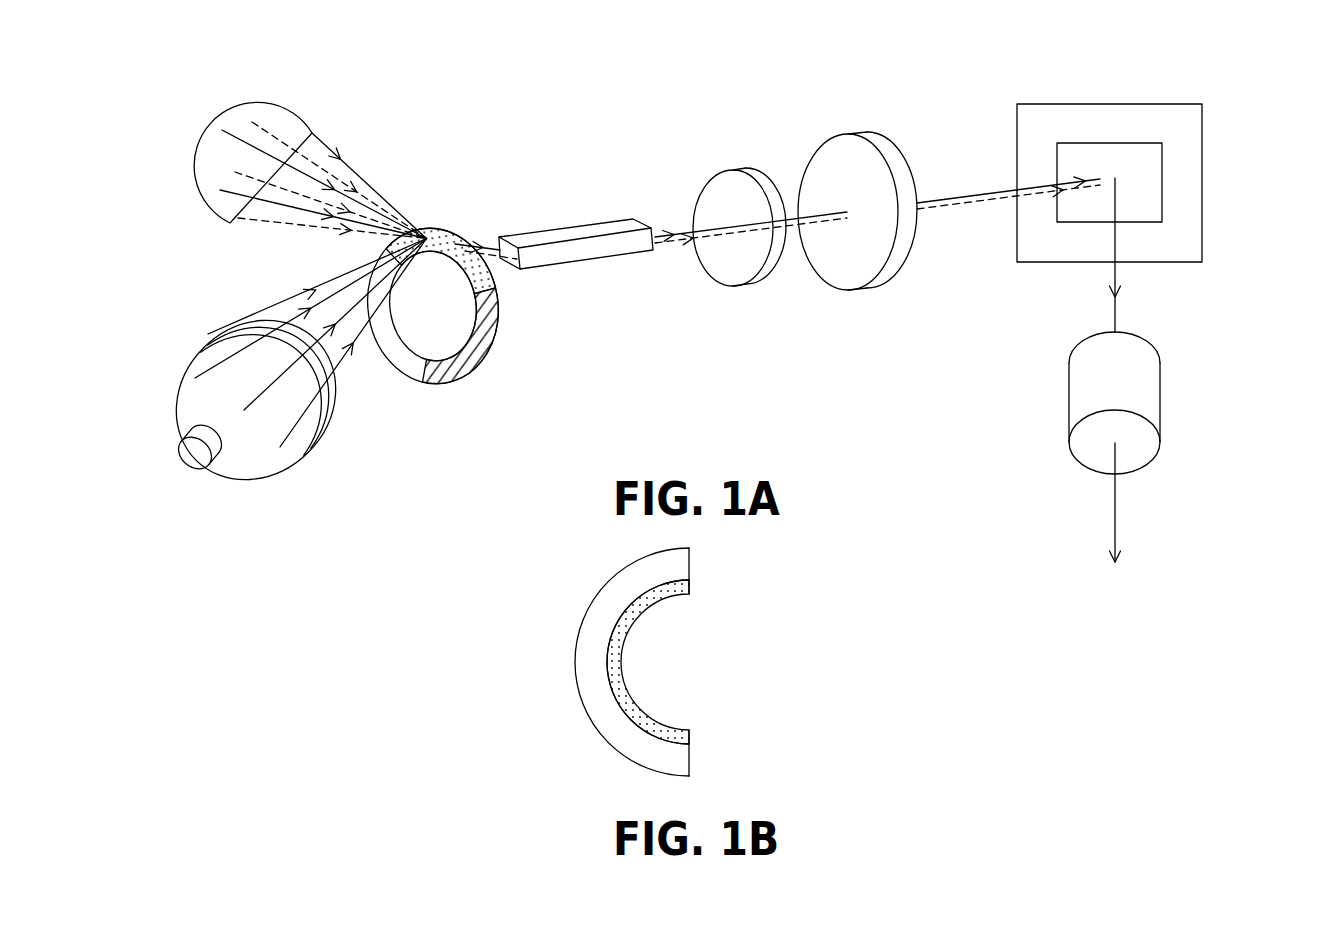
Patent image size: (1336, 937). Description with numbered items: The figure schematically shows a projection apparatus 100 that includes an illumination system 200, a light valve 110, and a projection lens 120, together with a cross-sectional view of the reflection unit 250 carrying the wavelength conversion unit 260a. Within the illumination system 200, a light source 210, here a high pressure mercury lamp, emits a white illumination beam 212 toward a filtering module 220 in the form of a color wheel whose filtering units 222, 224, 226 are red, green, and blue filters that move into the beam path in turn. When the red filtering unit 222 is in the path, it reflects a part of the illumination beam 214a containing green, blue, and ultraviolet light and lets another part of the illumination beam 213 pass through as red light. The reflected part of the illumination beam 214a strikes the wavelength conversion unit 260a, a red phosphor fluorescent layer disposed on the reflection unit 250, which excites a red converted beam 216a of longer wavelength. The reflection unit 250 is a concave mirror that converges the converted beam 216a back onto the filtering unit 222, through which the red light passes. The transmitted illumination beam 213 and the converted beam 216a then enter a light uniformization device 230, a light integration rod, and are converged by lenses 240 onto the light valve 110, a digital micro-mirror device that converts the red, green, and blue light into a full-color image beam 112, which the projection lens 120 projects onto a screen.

In FIG. 1A, the projection apparatus 100 is at (1315, 515).
In FIG. 1A, the light valve 110 is at (1182, 168).
In FIG. 1A, the image beam 112 is at (1115, 315).
In FIG. 1A, the projection lens 120 is at (1140, 385).
In FIG. 1A, the illumination system 200 is at (155, 170).
In FIG. 1A, the light source 210 is at (200, 405).
In FIG. 1A, the illumination beam 212 is at (242, 322).
In FIG. 1A, the another part of the illumination beam 213 is at (710, 227).
In FIG. 1A, the part of the illumination beam reflected by the filtering unit 214a is at (350, 175).
In FIG. 1A, the converted beam 216a is at (265, 112).
In FIG. 1A, the filtering module 220 is at (477, 347).
In FIG. 1A, the filtering unit in the first color 222 is at (500, 300).
In FIG. 1A, the filtering unit in the second color 224 is at (395, 347).
In FIG. 1A, the filtering unit in the third color 226 is at (460, 372).
In FIG. 1A, the light uniformization device 230 is at (598, 228).
In FIG. 1A, the lens 240 is at (843, 172).
In FIG. 1A, the reflection unit 250 is at (218, 112).
In FIG. 1B, the reflection unit 250 is at (595, 683).
In FIG. 1A, the wavelength conversion unit 260a is at (323, 133).
In FIG. 1B, the wavelength conversion unit 260a is at (622, 673).